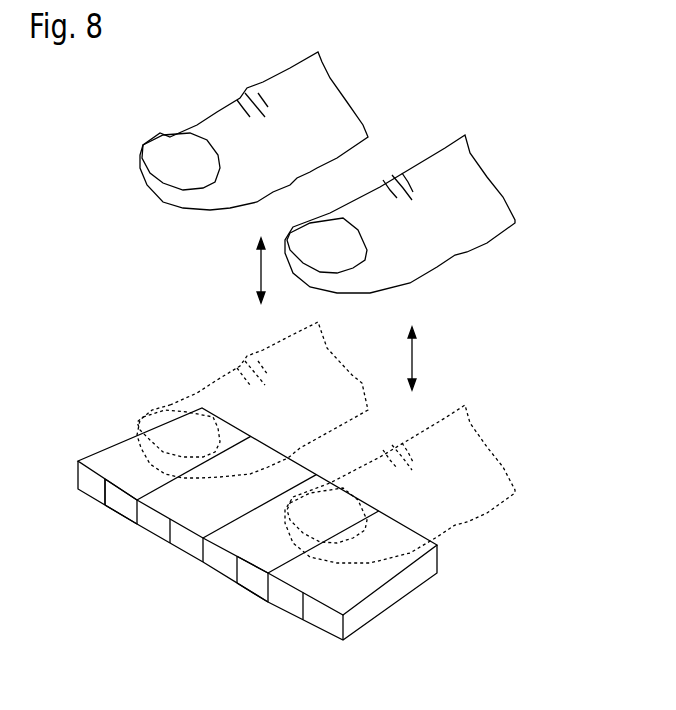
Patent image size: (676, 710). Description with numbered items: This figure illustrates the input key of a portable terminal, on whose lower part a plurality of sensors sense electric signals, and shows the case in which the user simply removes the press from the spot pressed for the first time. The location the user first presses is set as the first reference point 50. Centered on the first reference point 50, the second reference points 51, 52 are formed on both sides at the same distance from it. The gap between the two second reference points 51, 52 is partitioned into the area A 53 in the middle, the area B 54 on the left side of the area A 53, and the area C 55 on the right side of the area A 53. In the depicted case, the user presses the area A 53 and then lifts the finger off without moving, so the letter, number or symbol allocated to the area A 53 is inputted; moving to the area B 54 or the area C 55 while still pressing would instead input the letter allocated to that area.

The first reference point 50 is at (259, 536).
The second reference point 51 is at (268, 603).
The second reference point 52 is at (137, 527).
The area A 53 is at (318, 468).
The area B 54 is at (405, 520).
The area C 55 is at (252, 400).